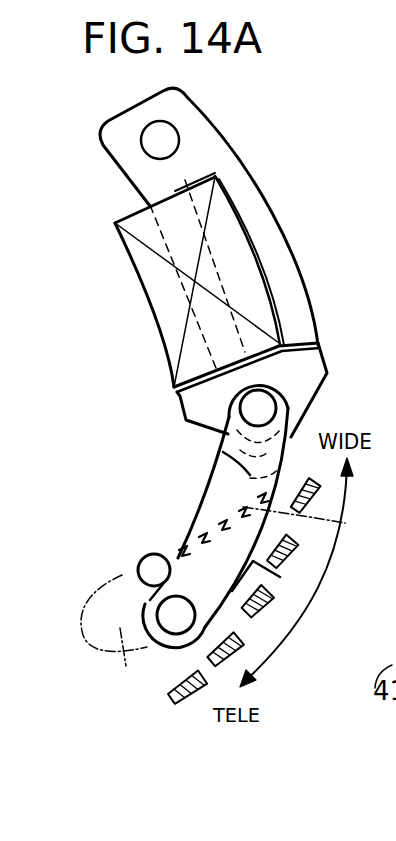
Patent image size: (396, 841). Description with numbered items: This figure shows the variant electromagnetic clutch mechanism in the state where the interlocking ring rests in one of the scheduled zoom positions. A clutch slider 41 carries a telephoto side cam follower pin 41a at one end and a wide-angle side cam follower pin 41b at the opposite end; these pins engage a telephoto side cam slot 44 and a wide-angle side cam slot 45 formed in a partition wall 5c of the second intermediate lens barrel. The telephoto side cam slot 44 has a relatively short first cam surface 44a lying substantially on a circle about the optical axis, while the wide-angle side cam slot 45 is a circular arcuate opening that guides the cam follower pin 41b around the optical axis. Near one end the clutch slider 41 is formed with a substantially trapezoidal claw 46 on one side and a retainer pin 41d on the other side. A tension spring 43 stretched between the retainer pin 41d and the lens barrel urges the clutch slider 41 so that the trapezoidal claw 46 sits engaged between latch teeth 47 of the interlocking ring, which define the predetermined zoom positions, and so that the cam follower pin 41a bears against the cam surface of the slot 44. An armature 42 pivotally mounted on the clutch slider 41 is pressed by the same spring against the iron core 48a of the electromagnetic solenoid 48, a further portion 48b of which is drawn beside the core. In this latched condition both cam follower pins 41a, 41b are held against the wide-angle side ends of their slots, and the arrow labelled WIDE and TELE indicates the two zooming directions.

The zoom drive arm 48 is at (275, 152).
The iron core 48a is at (283, 266).
The guide plate 48b is at (162, 294).
The armature 42 is at (313, 357).
The wide-angle side cam follower pin 41b is at (274, 408).
The wide-angle side cam slot 45 is at (223, 445).
The clutch slider 41 is at (220, 486).
The tension spring 43 is at (210, 501).
The partition wall 5c is at (315, 520).
The latch teeth 47 is at (295, 553).
The trapezoidal claw 46 is at (270, 580).
The retainer pin 41d is at (154, 554).
The telephoto side cam follower pin 41a is at (140, 587).
The telephoto side cam slot 44 is at (123, 668).
The first cam surface 44a is at (155, 636).